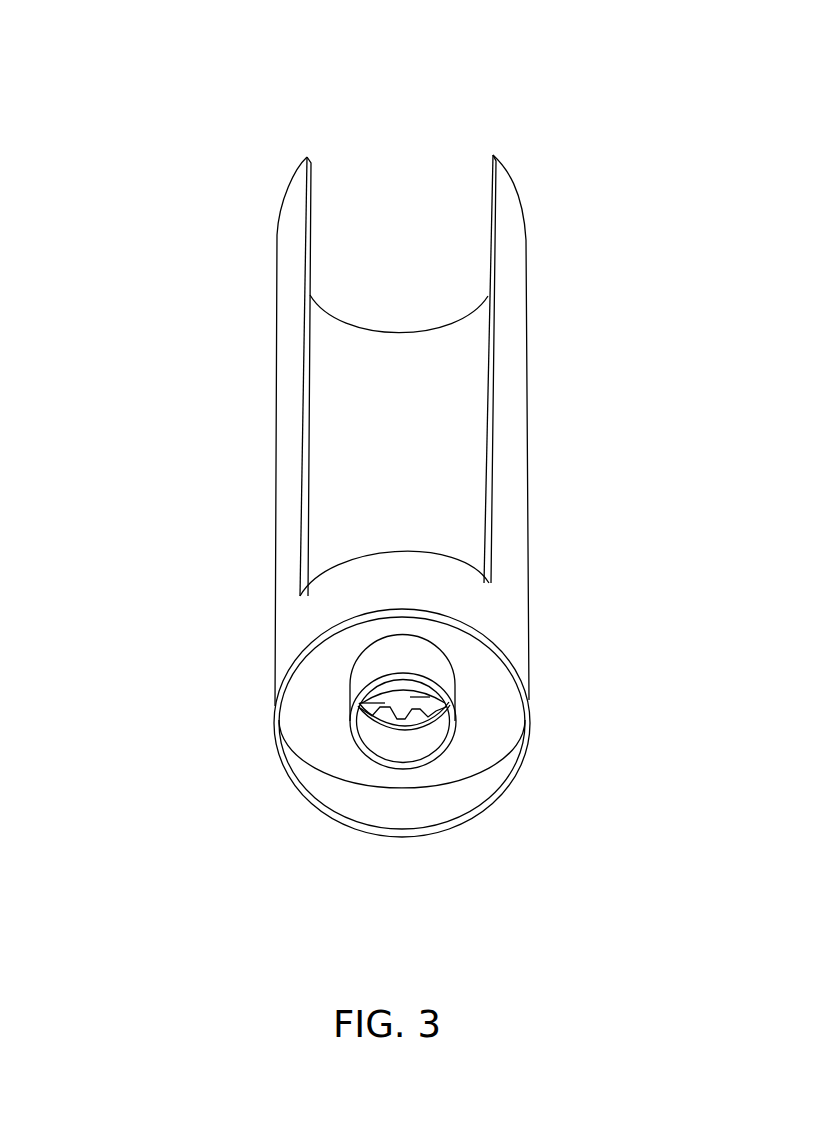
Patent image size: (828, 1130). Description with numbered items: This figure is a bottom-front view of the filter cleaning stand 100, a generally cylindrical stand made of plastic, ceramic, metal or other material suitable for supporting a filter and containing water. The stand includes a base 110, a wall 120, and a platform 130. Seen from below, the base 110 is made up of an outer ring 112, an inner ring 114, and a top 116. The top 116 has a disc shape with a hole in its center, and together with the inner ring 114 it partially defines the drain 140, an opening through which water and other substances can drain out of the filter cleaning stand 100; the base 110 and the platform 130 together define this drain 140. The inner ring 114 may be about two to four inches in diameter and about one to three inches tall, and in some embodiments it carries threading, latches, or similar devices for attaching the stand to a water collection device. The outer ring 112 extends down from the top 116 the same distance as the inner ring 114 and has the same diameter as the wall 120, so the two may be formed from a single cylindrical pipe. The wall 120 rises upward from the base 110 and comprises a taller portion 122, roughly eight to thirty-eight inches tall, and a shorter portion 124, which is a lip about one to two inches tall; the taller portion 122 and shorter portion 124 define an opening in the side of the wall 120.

The filter cleaning stand 100 is at (181, 46).
The base 110 is at (477, 620).
The outer ring 112 is at (508, 659).
The inner ring 114 is at (393, 750).
The top 116 is at (387, 779).
The wall 120 is at (299, 185).
The taller portion 122 is at (309, 252).
The shorter portion 124 is at (393, 550).
The platform 130 is at (360, 703).
The drain 140 is at (430, 698).